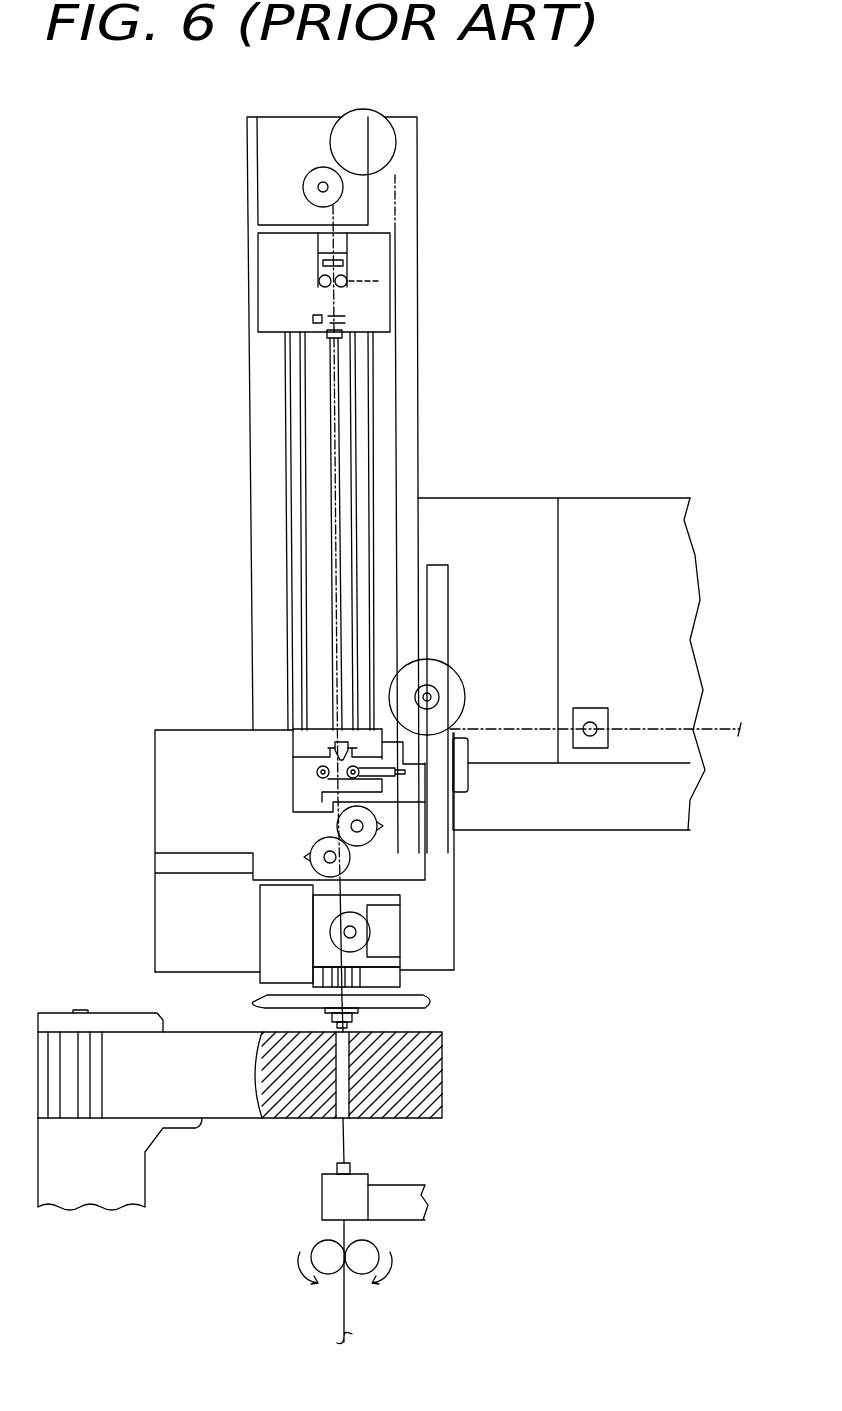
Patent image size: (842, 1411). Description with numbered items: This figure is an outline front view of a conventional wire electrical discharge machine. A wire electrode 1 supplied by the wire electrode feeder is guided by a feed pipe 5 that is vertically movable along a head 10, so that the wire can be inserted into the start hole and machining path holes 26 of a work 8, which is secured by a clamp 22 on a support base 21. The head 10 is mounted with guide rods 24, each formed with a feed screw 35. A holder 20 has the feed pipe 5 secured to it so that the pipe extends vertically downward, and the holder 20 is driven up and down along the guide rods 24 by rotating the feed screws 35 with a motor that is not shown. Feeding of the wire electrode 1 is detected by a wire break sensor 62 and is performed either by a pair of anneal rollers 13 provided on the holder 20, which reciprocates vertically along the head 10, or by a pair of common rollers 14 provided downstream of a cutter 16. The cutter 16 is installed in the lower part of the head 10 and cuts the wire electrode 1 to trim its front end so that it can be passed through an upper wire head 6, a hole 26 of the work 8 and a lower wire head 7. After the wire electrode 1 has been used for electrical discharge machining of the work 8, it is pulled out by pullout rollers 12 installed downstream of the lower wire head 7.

The wire electrode 1 is at (333, 218).
The feed pipe 5 is at (337, 428).
The upper wire head 6 is at (325, 973).
The lower wire head 7 is at (327, 1203).
The work 8 is at (427, 1078).
The head 10 is at (265, 412).
The pullout rollers 12 is at (375, 1250).
The anneal rollers 13 is at (322, 287).
The common rollers 14 is at (335, 776).
The cutter 16 is at (367, 727).
The holder 20 is at (268, 272).
The support base 21 is at (130, 1180).
The clamp 22 is at (133, 1018).
The guide rods 24 is at (297, 463).
The machining path holes 26 is at (340, 1120).
The feed screw 35 is at (370, 497).
The wire break sensor 62 is at (590, 722).